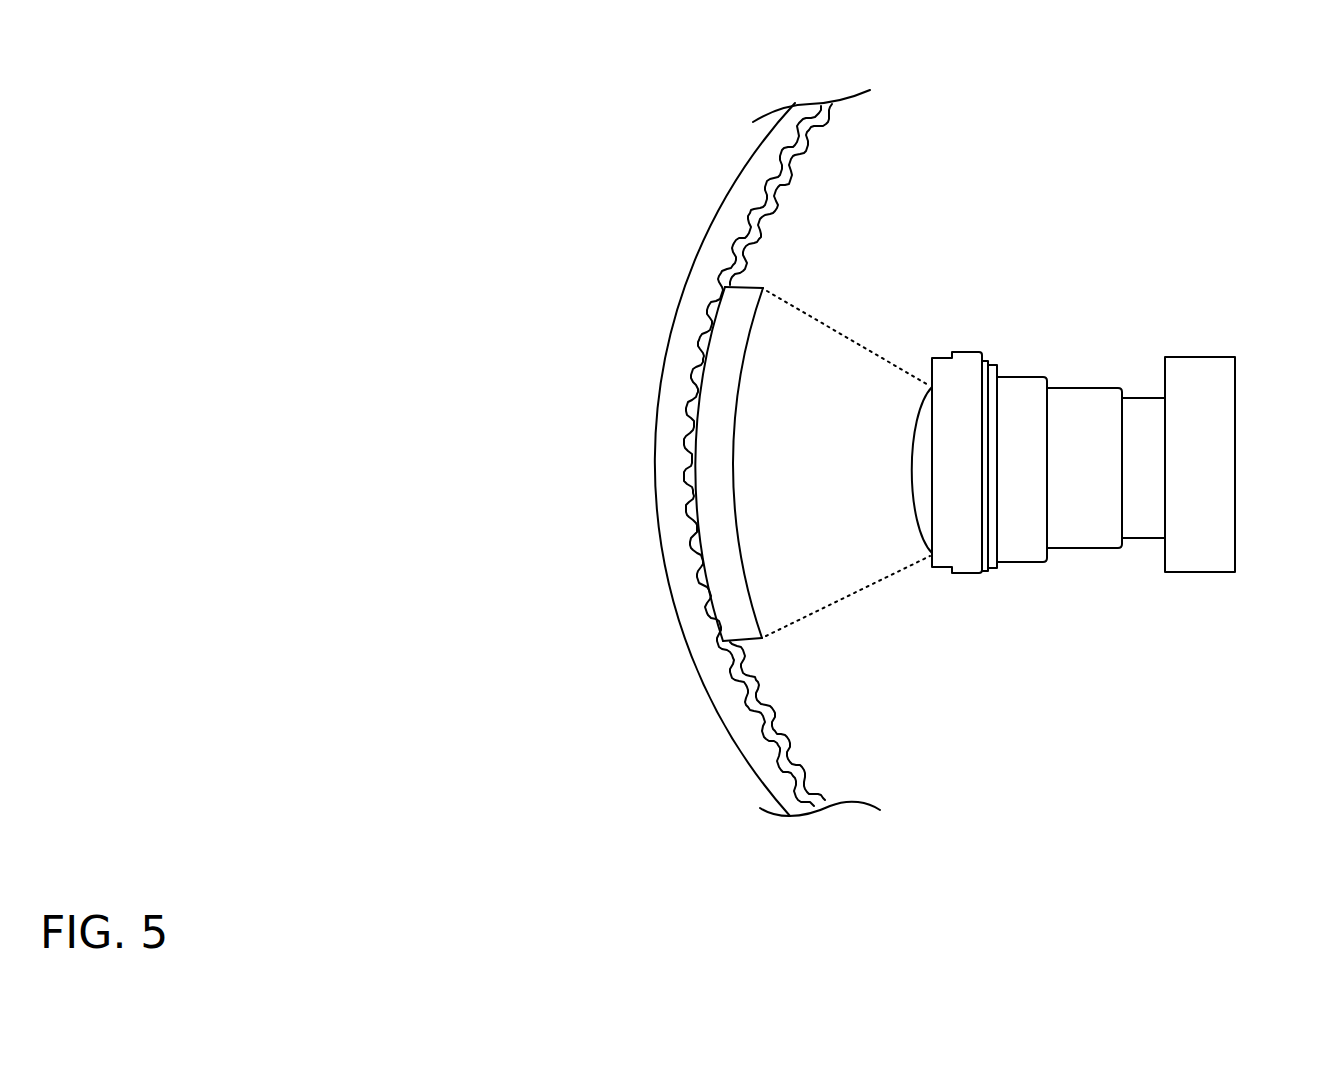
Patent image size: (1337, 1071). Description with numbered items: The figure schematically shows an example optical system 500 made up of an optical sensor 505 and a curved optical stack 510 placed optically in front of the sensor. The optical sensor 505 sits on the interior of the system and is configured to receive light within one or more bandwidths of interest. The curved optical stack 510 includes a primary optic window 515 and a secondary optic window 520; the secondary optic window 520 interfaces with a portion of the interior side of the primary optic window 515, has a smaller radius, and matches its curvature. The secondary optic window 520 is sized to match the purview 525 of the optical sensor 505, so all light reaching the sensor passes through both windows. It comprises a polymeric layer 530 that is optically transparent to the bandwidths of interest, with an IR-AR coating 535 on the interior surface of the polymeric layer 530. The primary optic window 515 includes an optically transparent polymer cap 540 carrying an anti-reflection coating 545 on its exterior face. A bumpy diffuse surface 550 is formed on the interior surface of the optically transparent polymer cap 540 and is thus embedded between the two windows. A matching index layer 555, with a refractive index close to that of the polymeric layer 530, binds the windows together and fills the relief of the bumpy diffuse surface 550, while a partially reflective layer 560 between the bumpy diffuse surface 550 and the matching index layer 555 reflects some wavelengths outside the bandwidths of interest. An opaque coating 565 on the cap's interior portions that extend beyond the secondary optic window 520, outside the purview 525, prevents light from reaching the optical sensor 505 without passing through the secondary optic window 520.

The optical system 500 is at (1240, 76).
The optical sensor 505 is at (1171, 305).
The curved optical stack 510 is at (677, 60).
The primary optic window 515 is at (695, 231).
The secondary optic window 520 is at (761, 276).
The purview 525 is at (836, 350).
The polymeric layer 530 is at (727, 377).
The IR-AR coating 535 is at (737, 557).
The optically transparent polymer cap 540 is at (795, 118).
The anti-reflection coating 545 is at (678, 610).
The bumpy diffuse surface 550 is at (680, 517).
The matching index layer 555 is at (683, 463).
The partially reflective layer 560 is at (688, 433).
The opaque coating 565 is at (802, 134).